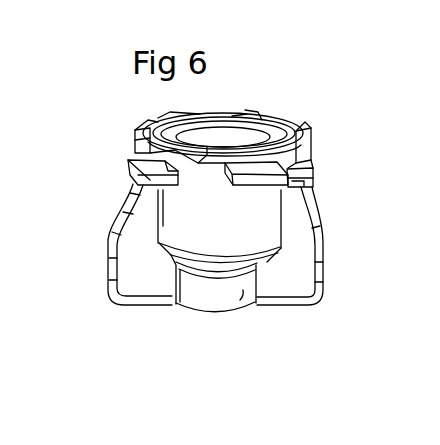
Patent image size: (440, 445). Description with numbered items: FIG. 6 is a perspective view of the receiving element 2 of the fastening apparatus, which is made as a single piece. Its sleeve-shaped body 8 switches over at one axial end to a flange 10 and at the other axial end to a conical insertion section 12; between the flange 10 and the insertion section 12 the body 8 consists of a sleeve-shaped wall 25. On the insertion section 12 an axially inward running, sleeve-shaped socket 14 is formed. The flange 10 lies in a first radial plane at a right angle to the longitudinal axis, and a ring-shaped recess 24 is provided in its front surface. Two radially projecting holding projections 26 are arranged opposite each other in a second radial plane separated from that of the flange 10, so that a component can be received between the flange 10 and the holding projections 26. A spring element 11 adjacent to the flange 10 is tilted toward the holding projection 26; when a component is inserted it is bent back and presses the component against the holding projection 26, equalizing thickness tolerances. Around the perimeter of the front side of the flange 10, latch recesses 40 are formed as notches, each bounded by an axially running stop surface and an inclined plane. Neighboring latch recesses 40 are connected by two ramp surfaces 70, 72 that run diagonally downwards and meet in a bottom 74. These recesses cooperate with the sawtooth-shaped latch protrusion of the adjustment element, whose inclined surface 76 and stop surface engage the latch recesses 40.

The receiving element 2 is at (170, 370).
The sleeve-shaped body 8 is at (260, 236).
The flange 10 is at (300, 160).
The spring element 11 is at (315, 171).
The conical insertion section 12 is at (225, 264).
The sleeve-shaped socket 14 is at (241, 298).
The ring-shaped recess 24 is at (277, 125).
The sleeve-shaped wall 25 is at (207, 230).
The holding projection 26 is at (315, 187).
The latch recess 40 is at (252, 110).
The ramp surface 70 is at (147, 137).
The ramp surface 72 is at (190, 147).
The bottom 74 is at (148, 165).
The inclined surface 76 is at (247, 113).